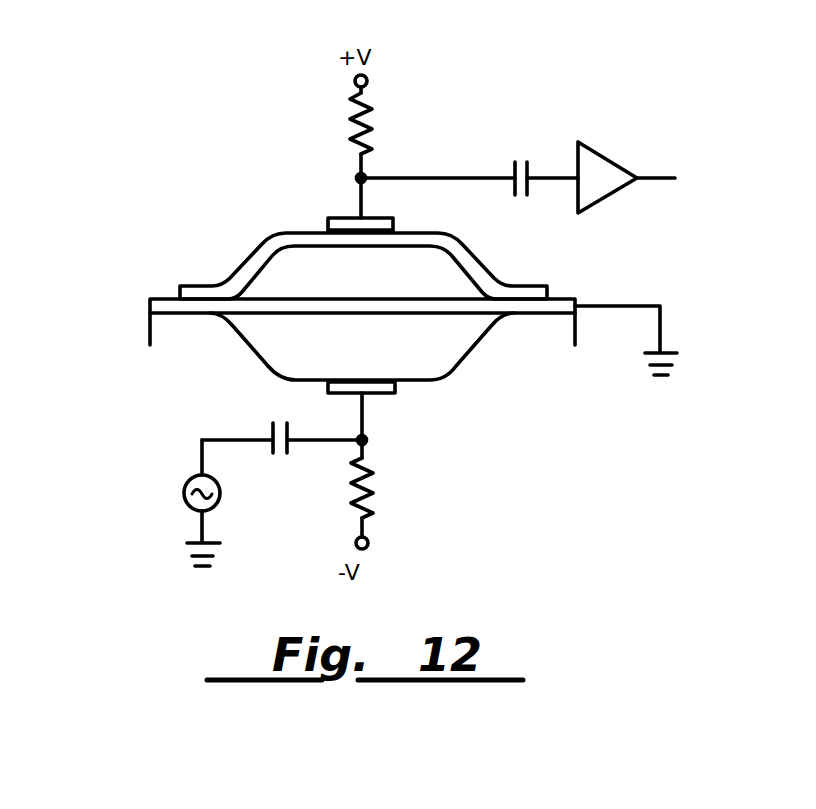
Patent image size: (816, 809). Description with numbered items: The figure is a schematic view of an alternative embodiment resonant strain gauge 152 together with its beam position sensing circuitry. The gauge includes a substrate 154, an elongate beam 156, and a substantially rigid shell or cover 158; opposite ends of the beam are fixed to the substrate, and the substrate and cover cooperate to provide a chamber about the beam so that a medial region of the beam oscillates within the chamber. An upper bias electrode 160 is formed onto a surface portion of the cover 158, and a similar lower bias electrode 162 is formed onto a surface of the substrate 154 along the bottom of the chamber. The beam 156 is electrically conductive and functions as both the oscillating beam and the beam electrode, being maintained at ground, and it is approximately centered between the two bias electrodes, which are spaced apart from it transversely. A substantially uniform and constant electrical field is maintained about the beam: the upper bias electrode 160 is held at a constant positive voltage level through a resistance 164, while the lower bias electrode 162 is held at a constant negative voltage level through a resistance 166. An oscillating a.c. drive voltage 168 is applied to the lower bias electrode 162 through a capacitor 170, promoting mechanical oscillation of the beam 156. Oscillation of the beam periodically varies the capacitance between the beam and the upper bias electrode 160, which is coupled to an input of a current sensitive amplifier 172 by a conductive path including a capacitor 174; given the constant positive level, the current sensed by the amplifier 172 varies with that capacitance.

The resonant strain gauge 152 is at (162, 172).
The substrate 154 is at (177, 330).
The elongate beam 156 is at (435, 314).
The shell or cover 158 is at (280, 232).
The upper bias electrode 160 is at (388, 217).
The lower bias electrode 162 is at (385, 395).
The resistance 164 is at (363, 150).
The resistance 166 is at (368, 490).
The oscillating drive voltage 168 is at (182, 489).
The capacitor 170 is at (280, 454).
The current sensitive amplifier 172 is at (603, 152).
The capacitor 174 is at (522, 197).